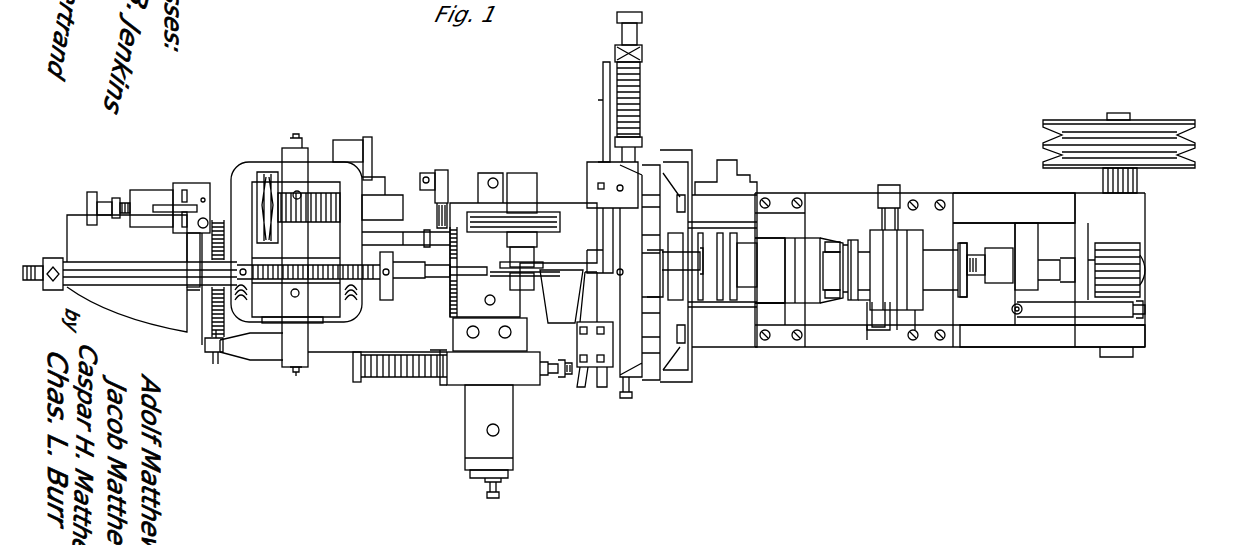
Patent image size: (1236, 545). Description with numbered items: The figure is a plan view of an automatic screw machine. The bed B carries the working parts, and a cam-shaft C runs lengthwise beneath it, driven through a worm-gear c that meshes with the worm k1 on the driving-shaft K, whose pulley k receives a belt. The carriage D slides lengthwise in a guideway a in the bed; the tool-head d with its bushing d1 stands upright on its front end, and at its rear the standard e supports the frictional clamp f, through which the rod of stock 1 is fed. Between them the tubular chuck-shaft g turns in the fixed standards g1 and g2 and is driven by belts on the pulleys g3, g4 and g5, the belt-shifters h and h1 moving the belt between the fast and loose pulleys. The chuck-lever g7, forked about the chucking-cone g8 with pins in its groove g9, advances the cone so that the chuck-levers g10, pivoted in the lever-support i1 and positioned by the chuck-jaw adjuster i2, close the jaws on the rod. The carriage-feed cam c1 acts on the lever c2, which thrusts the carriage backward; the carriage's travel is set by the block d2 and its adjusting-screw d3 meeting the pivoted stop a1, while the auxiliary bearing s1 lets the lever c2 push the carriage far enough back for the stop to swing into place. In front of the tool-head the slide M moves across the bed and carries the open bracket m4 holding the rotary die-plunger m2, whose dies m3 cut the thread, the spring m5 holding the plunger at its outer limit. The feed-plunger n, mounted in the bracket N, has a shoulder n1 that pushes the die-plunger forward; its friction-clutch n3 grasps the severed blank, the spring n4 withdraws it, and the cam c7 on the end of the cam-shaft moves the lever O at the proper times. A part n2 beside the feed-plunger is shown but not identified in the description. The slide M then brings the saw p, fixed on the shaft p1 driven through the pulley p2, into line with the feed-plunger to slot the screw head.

The lever O is at (55, 258).
The feed-plunger n is at (158, 280).
The cam c7 is at (165, 314).
The bracket N is at (296, 242).
The spring n4 is at (325, 280).
The shoulder n1 is at (392, 285).
The rod end n2 is at (394, 267).
The friction-clutch n3 is at (480, 278).
The rod of stock 1 is at (385, 198).
The slide M is at (523, 262).
The pulley p2 is at (517, 212).
The shaft p1 is at (530, 212).
The saw p is at (547, 280).
The spring m5 is at (372, 378).
The die-plunger m2 is at (404, 378).
The open bracket m4 is at (493, 425).
The dies m3 is at (567, 378).
The tool-head d is at (630, 195).
The bushing d1 is at (652, 272).
The cam-shaft C is at (730, 275).
The lever-support i1 is at (790, 240).
The chuck-jaw adjuster i2 is at (795, 330).
The standard g1 is at (790, 270).
The worm-gear c is at (821, 271).
The chuck-levers g10 is at (830, 240).
The chucking-cone g8 is at (830, 255).
The groove g9 is at (850, 275).
The chuck-shaft g is at (860, 250).
The chuck-lever g7 is at (850, 302).
The carriage D is at (855, 312).
The belt-shifter h is at (890, 192).
The belt-shifter h1 is at (870, 320).
The pulley g3 is at (875, 330).
The pulley g4 is at (897, 312).
The pulley g5 is at (916, 312).
The standard g2 is at (945, 270).
The lever c2 is at (985, 265).
The carriage-feed cam c1 is at (968, 278).
The guideway a is at (968, 230).
The standard e is at (1020, 245).
The frictional clamp f is at (1045, 268).
The pivoted stop a1 is at (1090, 255).
The driving-shaft K is at (1138, 110).
The pulley k is at (1185, 152).
The worm k1 is at (1135, 255).
The auxiliary bearing s1 is at (1008, 306).
The block d2 is at (1055, 318).
The adjusting-screw d3 is at (1145, 310).
The bed B is at (1052, 348).